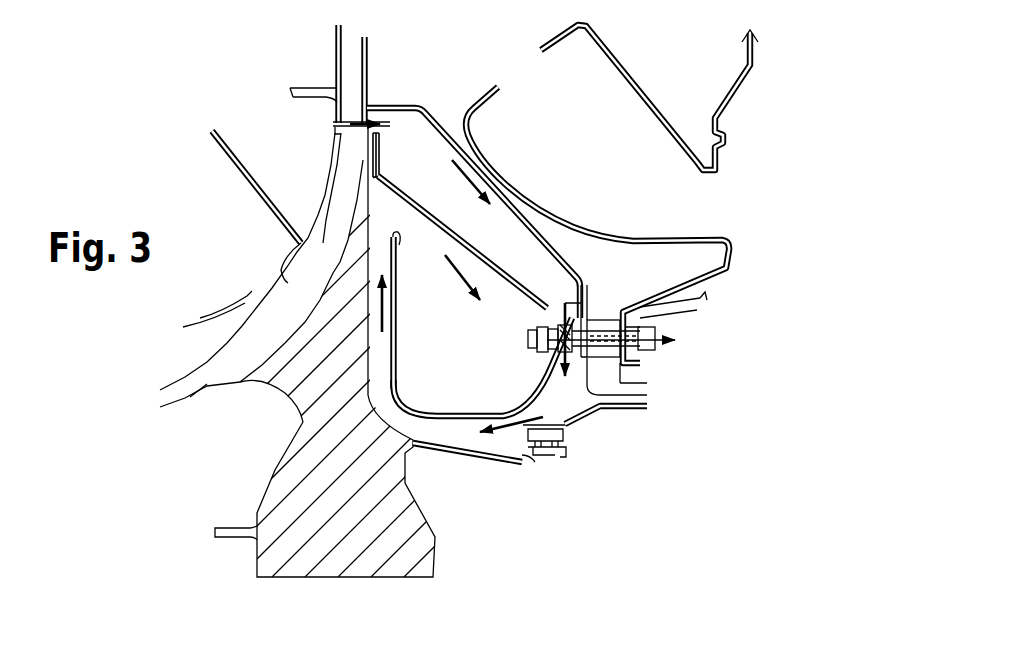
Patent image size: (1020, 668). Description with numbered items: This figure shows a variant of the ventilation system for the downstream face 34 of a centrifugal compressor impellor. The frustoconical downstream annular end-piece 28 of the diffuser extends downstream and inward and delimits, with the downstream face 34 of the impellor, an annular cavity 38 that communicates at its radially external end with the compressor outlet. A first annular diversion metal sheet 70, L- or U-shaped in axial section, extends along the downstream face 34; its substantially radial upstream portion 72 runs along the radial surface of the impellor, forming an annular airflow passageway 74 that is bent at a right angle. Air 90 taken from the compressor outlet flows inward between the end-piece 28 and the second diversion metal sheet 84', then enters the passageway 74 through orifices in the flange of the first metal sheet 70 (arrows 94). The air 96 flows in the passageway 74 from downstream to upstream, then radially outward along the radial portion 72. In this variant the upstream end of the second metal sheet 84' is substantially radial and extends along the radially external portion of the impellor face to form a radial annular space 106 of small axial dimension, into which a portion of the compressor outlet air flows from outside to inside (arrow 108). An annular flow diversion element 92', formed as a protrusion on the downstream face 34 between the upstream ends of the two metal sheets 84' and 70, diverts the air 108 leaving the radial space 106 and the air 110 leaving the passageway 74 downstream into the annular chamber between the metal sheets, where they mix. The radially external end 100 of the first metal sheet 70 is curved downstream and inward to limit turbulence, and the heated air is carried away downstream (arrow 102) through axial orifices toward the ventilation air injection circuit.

The downstream annular end-piece 28 is at (441, 114).
The downstream face 34 is at (367, 228).
The annular cavity 38 is at (451, 337).
The first annular diversion metal sheet 70 is at (472, 407).
The upstream portion 72 is at (399, 328).
The annular airflow passageway 74 is at (372, 402).
The second diversion metal sheet 84' is at (572, 338).
The air taken from the compressor outlet 90 is at (367, 121).
The annular flow diversion element 92' is at (460, 242).
The arrows indicating air entering the passageway 94 is at (580, 288).
The air flowing in the passageway 96 is at (510, 433).
The radially external end of the first metal sheet 100 is at (436, 246).
The arrow indicating hot air carried away 102 is at (667, 343).
The radial annular space 106 is at (362, 183).
The air flowing through the radial space 108 is at (379, 158).
The air coming out of the passageway 110 is at (368, 310).